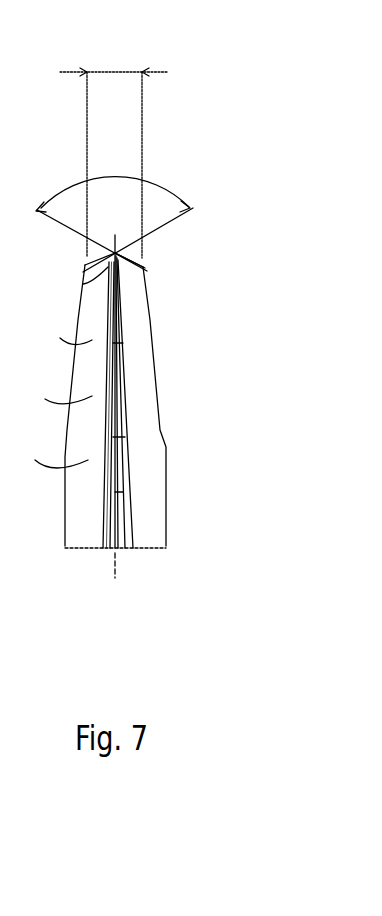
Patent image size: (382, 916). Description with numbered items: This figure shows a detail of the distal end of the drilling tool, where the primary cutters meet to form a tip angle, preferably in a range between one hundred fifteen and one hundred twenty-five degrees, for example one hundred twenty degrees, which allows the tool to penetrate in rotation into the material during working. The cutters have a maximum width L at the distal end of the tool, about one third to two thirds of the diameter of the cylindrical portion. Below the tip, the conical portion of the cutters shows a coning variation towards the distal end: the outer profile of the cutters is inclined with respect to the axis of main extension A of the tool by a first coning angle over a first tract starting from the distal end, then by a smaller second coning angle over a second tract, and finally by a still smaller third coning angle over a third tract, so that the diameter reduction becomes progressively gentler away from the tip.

The maximum width of the primary cutters L is at (110, 65).
The axis of main extension A is at (132, 567).